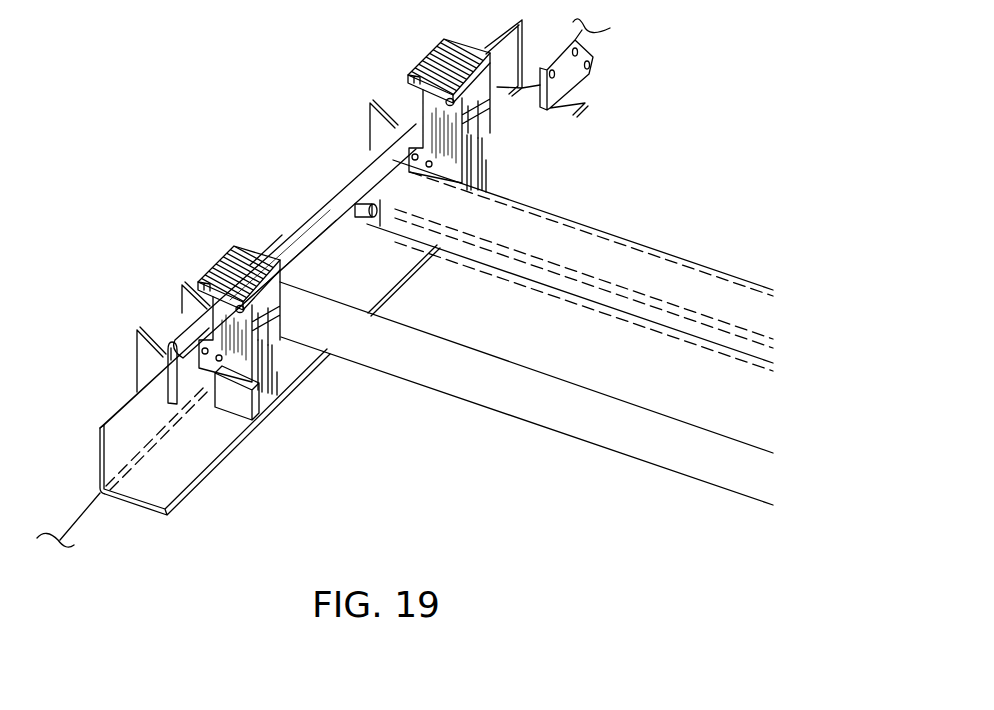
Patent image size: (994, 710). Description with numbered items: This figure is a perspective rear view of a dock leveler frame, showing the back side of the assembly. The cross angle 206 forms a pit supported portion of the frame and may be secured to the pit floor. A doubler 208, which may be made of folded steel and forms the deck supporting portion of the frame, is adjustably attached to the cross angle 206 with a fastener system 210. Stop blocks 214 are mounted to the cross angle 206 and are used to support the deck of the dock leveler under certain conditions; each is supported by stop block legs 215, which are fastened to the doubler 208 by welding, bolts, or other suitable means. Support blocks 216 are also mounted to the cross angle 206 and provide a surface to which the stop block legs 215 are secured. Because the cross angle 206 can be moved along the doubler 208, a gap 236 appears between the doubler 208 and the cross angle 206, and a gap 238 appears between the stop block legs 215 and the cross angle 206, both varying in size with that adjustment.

The cross angle 206 is at (172, 489).
The doubler 208 is at (372, 160).
The fastener system 210 is at (398, 224).
The stop block 214 is at (233, 248).
The stop block leg 215 is at (283, 353).
The support block 216 is at (246, 404).
The gap 236 is at (158, 347).
The gap 238 is at (286, 394).